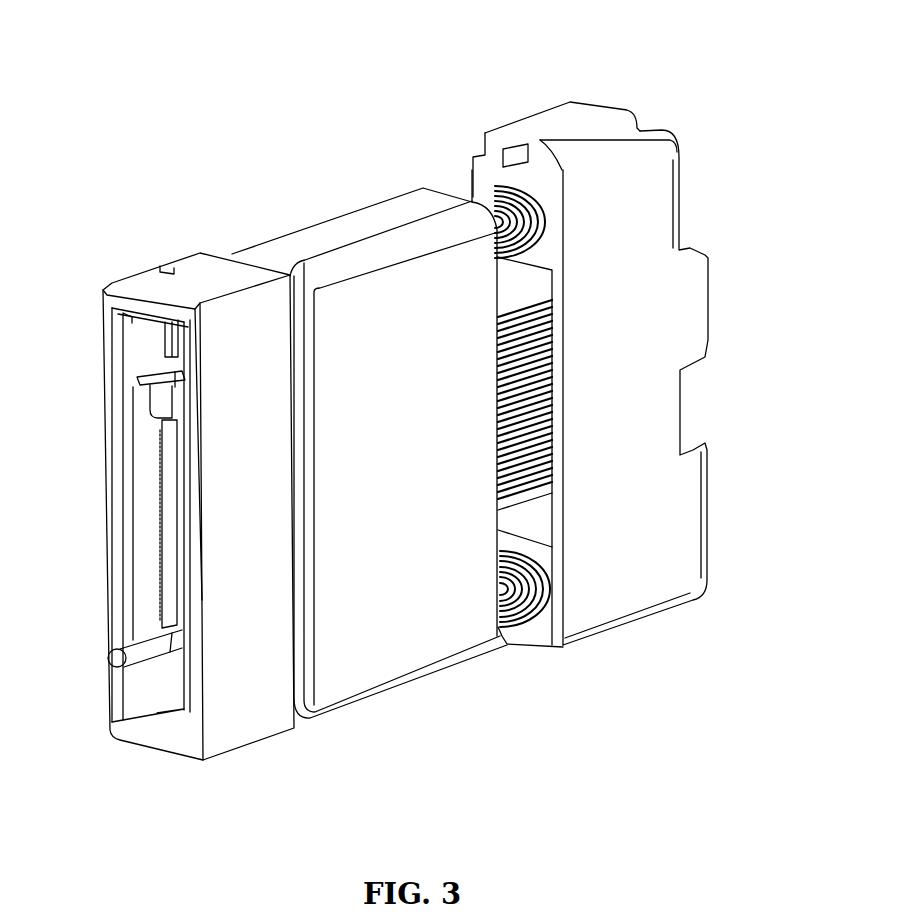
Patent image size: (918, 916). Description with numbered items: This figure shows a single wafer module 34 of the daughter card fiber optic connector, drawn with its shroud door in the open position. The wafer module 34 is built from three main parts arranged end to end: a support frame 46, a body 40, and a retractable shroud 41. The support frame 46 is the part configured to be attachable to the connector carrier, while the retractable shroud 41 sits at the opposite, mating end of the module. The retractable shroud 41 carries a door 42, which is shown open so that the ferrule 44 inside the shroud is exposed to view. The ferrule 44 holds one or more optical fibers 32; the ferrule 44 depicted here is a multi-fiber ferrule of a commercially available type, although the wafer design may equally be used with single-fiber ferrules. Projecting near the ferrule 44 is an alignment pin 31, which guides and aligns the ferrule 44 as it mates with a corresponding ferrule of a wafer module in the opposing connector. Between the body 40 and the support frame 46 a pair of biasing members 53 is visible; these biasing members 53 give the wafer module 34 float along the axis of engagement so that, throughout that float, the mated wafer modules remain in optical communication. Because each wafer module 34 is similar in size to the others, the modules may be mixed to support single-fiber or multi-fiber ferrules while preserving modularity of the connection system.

The wafer module 34 is at (271, 48).
The alignment pin 31 is at (125, 640).
The optical fibers 32 is at (145, 522).
The body 40 is at (400, 650).
The retractable shroud 41 is at (245, 733).
The door 42 is at (130, 328).
The ferrule 44 is at (143, 427).
The support frame 46 is at (660, 192).
The biasing members 53 is at (533, 613).